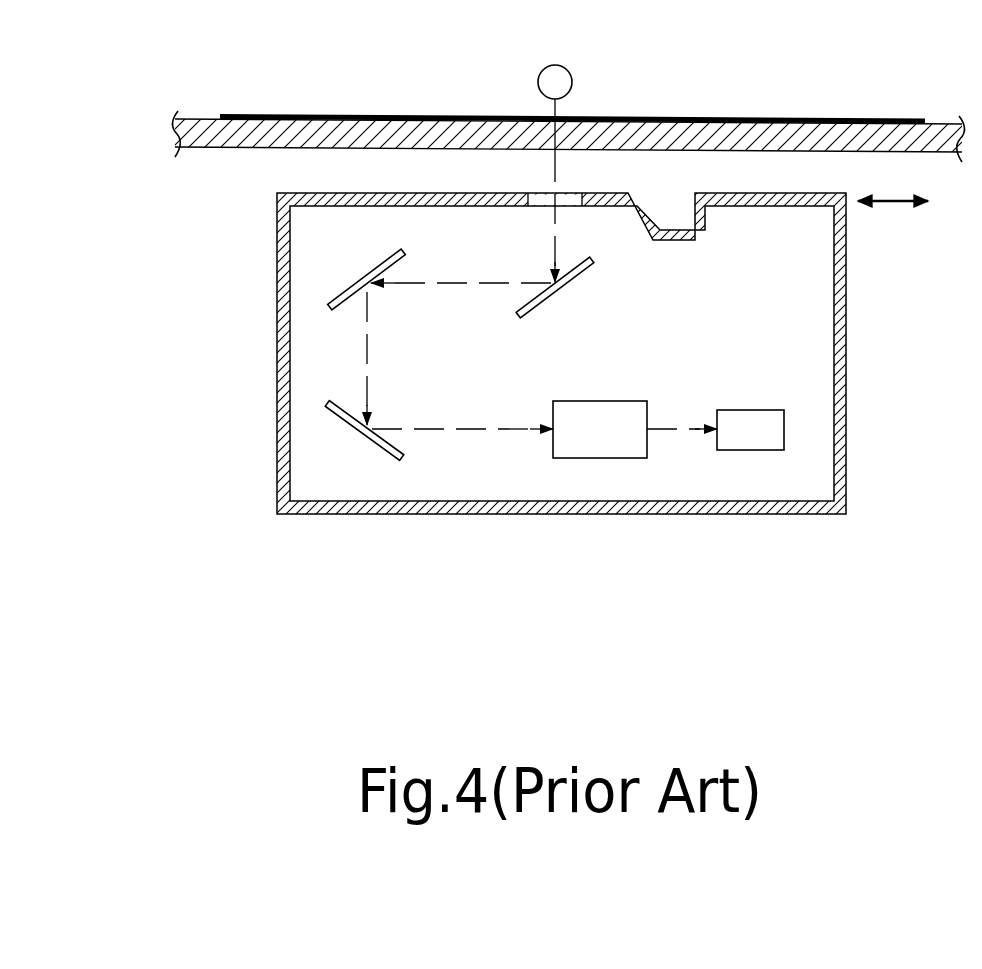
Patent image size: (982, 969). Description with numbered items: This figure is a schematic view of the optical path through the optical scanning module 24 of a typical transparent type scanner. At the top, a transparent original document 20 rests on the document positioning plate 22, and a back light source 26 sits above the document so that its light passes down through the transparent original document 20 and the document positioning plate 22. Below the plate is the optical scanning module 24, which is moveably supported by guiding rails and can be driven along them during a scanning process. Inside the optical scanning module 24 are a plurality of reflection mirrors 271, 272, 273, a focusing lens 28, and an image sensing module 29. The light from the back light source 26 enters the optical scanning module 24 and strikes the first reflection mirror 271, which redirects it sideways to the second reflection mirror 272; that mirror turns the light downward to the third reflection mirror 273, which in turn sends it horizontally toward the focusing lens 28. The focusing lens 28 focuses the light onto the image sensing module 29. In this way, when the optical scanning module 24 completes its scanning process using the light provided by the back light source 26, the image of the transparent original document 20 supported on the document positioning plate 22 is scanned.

The transparent original document 20 is at (484, 114).
The document positioning plate 22 is at (333, 138).
The optical scanning module 24 is at (277, 398).
The back light source 26 is at (572, 81).
The reflection mirror 271 is at (580, 272).
The reflection mirror 272 is at (352, 280).
The reflection mirror 273 is at (383, 448).
The focusing lens 28 is at (605, 450).
The image sensing module 29 is at (750, 443).